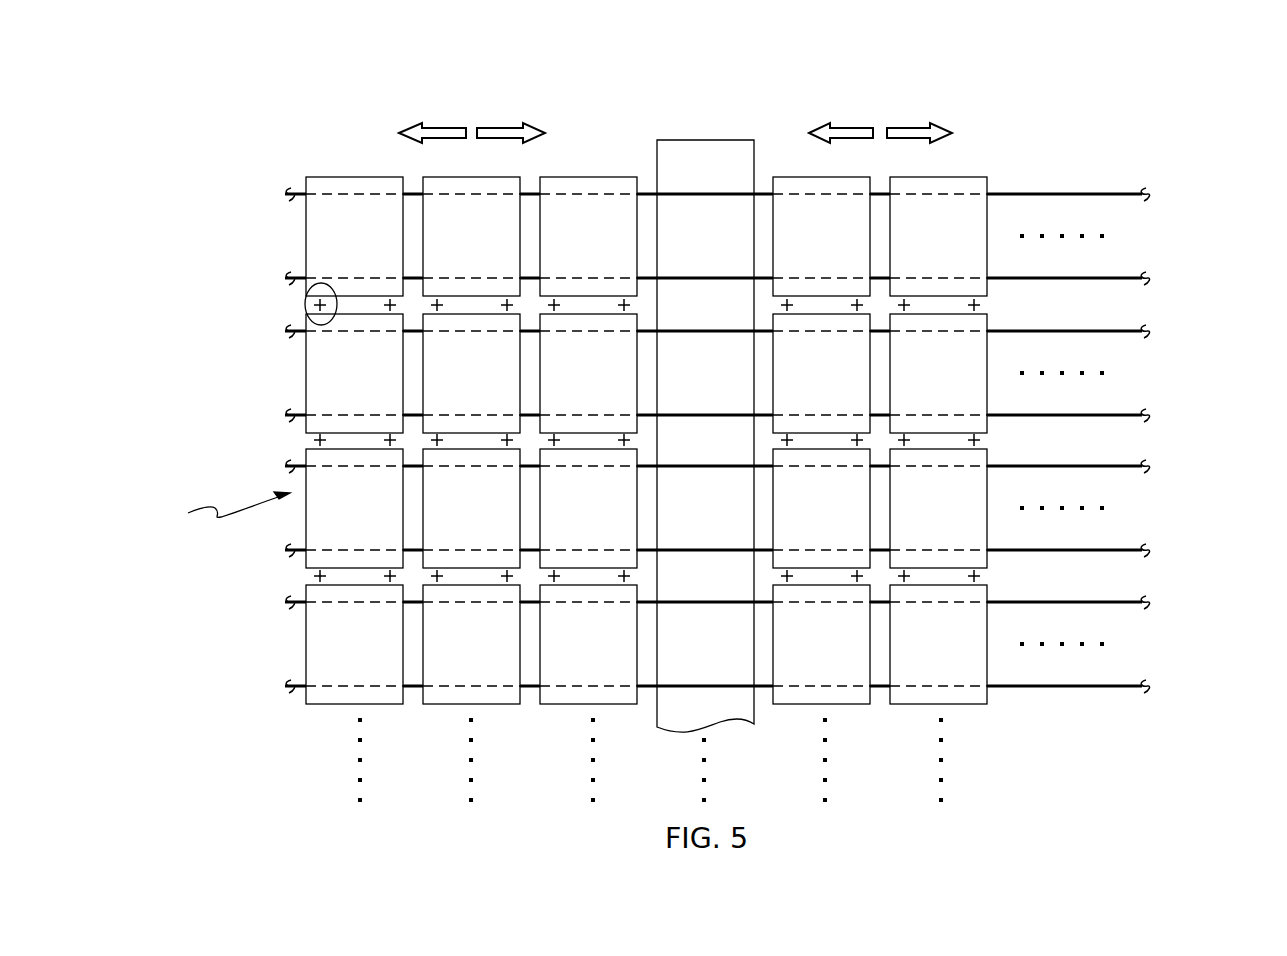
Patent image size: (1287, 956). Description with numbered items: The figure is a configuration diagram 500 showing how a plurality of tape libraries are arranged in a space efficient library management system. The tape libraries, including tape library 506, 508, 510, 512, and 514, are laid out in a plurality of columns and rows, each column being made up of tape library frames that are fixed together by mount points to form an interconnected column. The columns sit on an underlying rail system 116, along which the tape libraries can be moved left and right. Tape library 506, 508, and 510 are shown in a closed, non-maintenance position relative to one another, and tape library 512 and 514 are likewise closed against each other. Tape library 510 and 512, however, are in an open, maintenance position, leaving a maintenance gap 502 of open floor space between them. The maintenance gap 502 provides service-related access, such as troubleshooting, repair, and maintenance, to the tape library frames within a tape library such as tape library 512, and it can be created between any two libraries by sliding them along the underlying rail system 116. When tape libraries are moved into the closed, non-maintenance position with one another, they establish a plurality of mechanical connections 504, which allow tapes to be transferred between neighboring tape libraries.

The configuration diagram 500 is at (262, 137).
The maintenance gap 502 is at (713, 134).
The mechanical connections 504 is at (306, 296).
The tape library 506 is at (343, 704).
The tape library 508 is at (445, 704).
The tape library 510 is at (562, 704).
The tape library 512 is at (795, 704).
The tape library 514 is at (910, 704).
The underlying rail system 116 is at (1110, 278).